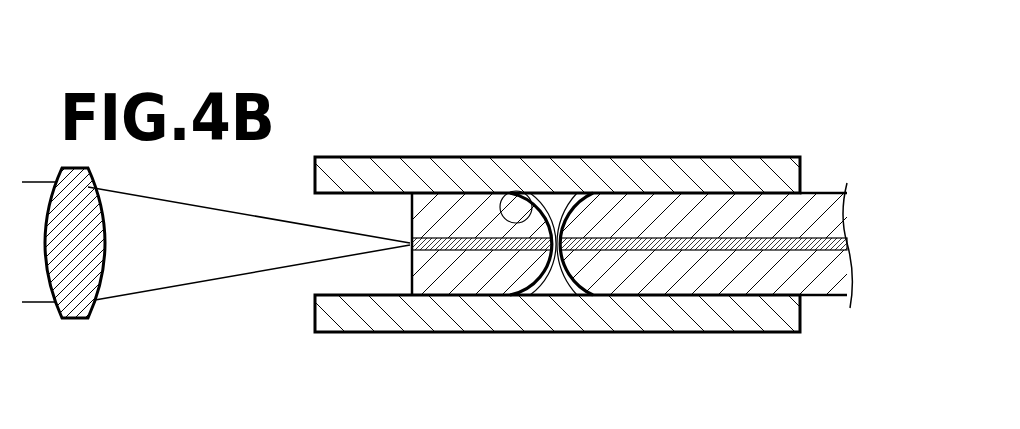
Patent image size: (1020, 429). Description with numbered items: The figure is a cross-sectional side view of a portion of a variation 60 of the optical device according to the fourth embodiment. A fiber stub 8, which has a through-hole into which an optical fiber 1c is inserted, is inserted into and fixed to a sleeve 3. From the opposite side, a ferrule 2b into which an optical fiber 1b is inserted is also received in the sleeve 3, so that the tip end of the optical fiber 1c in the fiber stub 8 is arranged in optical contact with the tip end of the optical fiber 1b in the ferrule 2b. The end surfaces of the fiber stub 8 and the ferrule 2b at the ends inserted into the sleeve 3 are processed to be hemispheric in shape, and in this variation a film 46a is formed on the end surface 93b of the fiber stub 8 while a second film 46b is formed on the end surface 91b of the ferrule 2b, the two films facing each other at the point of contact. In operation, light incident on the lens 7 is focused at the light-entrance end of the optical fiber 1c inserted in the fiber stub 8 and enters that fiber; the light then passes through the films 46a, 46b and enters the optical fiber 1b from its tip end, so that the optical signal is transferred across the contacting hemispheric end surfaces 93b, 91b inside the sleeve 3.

The lens 7 is at (73, 318).
The variation of the optical device 60 is at (788, 86).
The sleeve 3 is at (582, 172).
The fiber stub 8 is at (452, 287).
The optical fiber 1c is at (431, 237).
The optical fiber 1b is at (819, 238).
The ferrule 2b is at (823, 288).
The film 46a is at (547, 289).
The film 46b is at (594, 194).
The end surface 91b is at (592, 280).
The end surface 93b is at (501, 200).